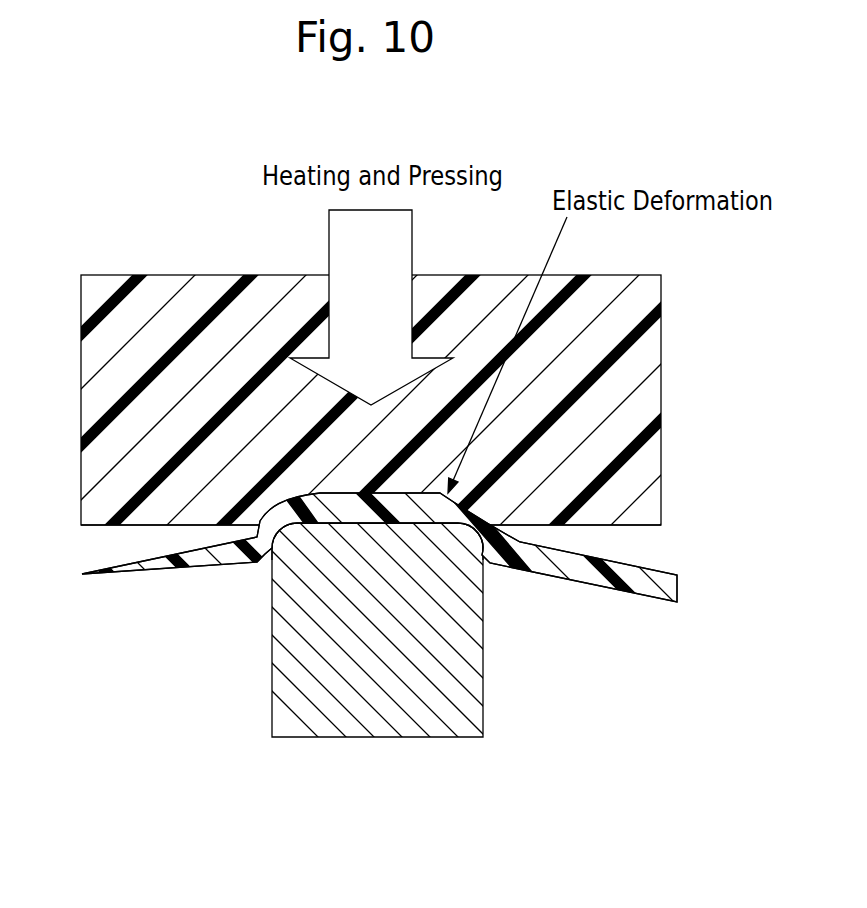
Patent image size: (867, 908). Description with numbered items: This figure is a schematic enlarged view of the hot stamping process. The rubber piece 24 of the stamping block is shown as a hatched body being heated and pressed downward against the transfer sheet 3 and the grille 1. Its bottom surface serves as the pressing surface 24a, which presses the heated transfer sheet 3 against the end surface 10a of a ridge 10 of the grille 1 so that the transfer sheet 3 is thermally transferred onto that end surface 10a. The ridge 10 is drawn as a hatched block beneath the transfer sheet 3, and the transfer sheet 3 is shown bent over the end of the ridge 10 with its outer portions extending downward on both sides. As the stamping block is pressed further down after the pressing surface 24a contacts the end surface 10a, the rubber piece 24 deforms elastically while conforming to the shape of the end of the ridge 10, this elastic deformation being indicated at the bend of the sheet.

The rubber piece 24 is at (130, 423).
The pressing surface 24a is at (338, 523).
The transfer sheet 3 is at (152, 570).
The end surface 10a is at (273, 558).
The grille 1 is at (390, 672).
The ridge 10 is at (347, 710).